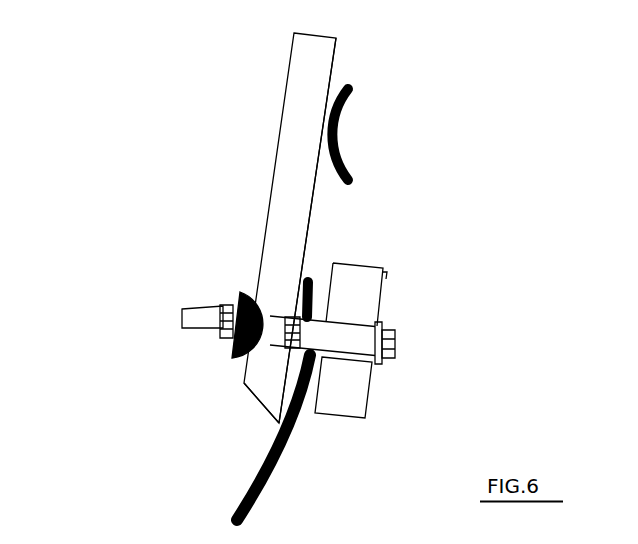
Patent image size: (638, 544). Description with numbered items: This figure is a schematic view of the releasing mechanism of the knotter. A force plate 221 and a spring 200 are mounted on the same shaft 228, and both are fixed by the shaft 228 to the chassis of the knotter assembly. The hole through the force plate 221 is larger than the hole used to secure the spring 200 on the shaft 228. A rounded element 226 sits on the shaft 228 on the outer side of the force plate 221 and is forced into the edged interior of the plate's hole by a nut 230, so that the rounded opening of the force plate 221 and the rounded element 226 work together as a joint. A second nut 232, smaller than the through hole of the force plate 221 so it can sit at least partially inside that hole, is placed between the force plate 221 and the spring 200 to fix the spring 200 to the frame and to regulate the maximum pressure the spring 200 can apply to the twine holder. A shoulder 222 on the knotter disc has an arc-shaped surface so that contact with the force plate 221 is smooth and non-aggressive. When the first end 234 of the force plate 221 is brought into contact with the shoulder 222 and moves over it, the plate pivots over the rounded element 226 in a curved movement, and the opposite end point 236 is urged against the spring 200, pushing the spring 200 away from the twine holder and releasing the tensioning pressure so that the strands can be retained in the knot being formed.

The spring 200 is at (278, 460).
The force plate 221 is at (285, 200).
The shoulder 222 is at (340, 131).
The rounded element 226 is at (237, 295).
The shaft 228 is at (341, 343).
The nut 230 is at (222, 328).
The second nut 232 is at (285, 320).
The first end of force plate 234 is at (332, 68).
The opposite end point of force plate 236 is at (278, 421).